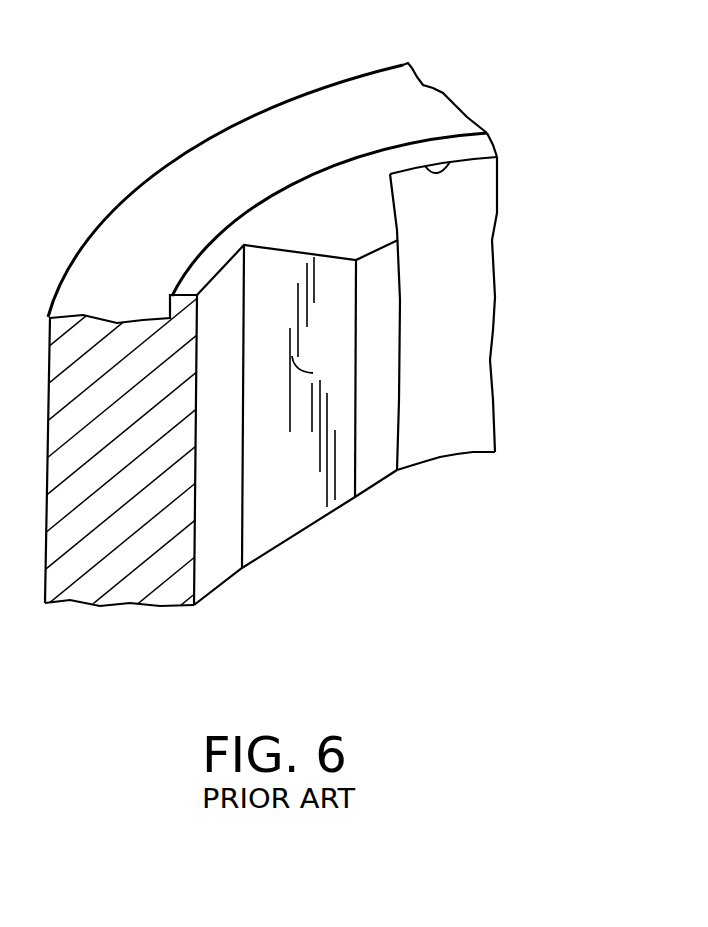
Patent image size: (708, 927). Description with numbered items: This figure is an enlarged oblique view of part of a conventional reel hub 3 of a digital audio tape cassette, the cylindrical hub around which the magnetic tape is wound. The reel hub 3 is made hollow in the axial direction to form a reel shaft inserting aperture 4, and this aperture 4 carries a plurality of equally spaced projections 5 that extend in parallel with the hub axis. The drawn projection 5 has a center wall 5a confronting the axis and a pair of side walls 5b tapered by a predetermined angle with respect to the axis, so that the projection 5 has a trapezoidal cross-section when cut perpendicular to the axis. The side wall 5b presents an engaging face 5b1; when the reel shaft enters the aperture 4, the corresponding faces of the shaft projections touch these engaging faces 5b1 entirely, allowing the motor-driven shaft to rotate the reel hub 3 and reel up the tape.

The reel hub 3 is at (245, 180).
The reel shaft inserting aperture 4 is at (435, 174).
The projection 5 is at (343, 215).
The center wall 5a is at (377, 430).
The side wall 5b is at (318, 332).
The engaging face 5b1 is at (313, 373).